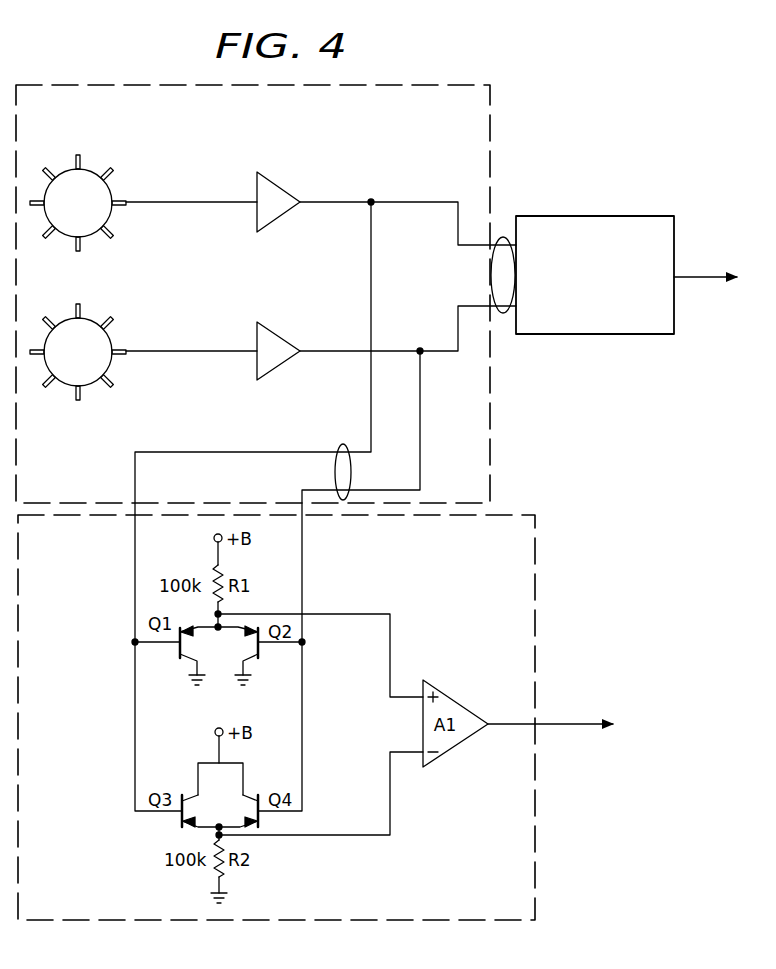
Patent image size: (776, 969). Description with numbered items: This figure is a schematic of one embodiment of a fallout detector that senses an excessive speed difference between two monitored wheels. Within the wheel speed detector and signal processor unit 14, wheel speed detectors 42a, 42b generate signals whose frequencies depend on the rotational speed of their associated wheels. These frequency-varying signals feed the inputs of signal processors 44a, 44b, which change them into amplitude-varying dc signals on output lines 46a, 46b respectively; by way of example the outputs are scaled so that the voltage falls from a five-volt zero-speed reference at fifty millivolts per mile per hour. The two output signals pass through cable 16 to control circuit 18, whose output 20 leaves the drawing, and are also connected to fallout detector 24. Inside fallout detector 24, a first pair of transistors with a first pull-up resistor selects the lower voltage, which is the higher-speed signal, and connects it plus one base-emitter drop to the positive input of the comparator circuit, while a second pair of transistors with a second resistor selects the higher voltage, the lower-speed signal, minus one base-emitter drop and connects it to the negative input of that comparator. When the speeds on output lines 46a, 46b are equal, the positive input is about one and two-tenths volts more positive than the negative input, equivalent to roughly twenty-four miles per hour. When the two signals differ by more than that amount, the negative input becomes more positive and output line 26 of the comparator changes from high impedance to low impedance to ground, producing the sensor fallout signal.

The wheel speed detector and signal processor unit 14 is at (438, 124).
The cable / signal lines 16 is at (493, 272).
The control circuit 18 is at (583, 306).
The control circuit output 20 is at (702, 275).
The fallout detector 24 is at (451, 557).
The output line 26 is at (559, 723).
The wheel speed detector 42a is at (112, 221).
The wheel speed detector 42b is at (112, 370).
The signal processor 44a is at (257, 182).
The signal processor 44b is at (268, 336).
The output line 46a is at (320, 200).
The output line 46b is at (383, 345).